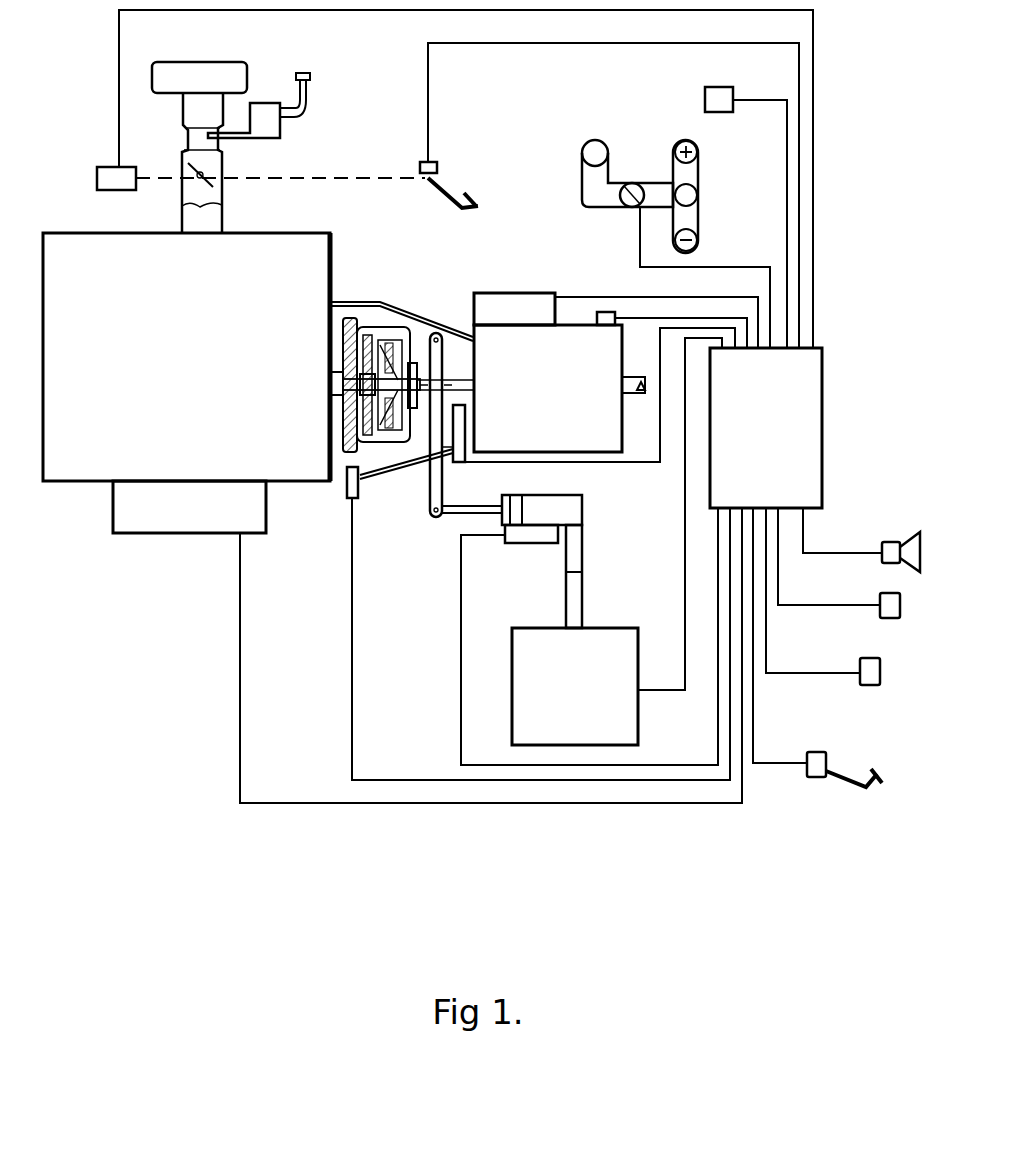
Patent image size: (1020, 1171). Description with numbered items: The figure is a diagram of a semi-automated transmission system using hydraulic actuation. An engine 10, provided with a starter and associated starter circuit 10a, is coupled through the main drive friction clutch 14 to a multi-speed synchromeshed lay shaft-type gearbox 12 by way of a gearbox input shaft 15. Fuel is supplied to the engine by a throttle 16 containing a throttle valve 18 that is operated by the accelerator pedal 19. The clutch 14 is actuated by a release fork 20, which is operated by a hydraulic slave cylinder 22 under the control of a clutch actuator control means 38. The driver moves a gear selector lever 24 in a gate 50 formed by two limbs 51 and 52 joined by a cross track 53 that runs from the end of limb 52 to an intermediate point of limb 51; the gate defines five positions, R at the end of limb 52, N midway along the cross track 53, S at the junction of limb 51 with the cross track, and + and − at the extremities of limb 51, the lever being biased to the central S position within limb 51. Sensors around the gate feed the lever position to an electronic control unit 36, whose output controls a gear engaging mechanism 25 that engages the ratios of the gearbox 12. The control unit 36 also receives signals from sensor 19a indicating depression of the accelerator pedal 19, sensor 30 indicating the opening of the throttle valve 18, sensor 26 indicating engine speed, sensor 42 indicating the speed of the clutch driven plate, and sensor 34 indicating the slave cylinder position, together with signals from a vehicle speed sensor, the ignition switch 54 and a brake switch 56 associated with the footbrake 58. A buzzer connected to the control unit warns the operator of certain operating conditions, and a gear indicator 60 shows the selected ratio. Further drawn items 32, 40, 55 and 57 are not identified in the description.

The engine 10 is at (193, 357).
The starter and associated starter circuit 10a is at (189, 507).
The gearbox 12 is at (559, 388).
The main drive friction clutch 14 is at (356, 298).
The gearbox input shaft 15 is at (462, 387).
The throttle 16 is at (230, 188).
The throttle valve 18 is at (205, 183).
The accelerator pedal 19 is at (445, 190).
The accelerator pedal sensor 19a is at (433, 160).
The release fork 20 is at (428, 492).
The hydraulic slave cylinder 22 is at (562, 505).
The gear selector lever 24 is at (628, 187).
The gear engaging mechanism 25 is at (616, 320).
The engine speed sensor 26 is at (345, 492).
The throttle valve opening sensor 30 is at (97, 180).
The gear sensor 32 is at (603, 312).
The clutch slave cylinder position sensor 34 is at (538, 540).
The electronic control unit 36 is at (531, 575).
The clutch actuator control means 38 is at (617, 541).
The clutch 40 is at (380, 325).
The clutch driven plate speed sensor 42 is at (462, 423).
The gate 50 is at (572, 178).
The limb 51 is at (695, 173).
The limb 52 is at (578, 173).
The cross track 53 is at (610, 212).
The ignition switch 54 is at (871, 661).
The horn / buzzer 55 is at (887, 542).
The brake switch 56 is at (815, 757).
The indicator 57 is at (890, 596).
The footbrake 58 is at (848, 787).
The gear indicator 60 is at (705, 100).